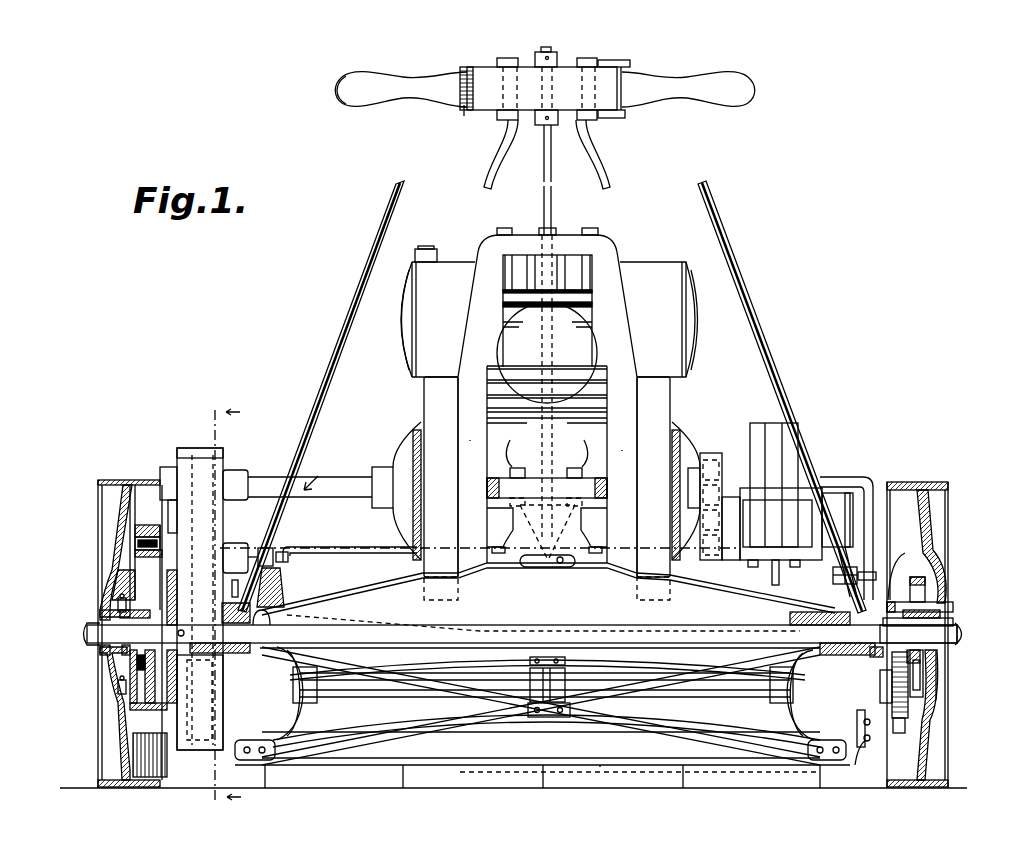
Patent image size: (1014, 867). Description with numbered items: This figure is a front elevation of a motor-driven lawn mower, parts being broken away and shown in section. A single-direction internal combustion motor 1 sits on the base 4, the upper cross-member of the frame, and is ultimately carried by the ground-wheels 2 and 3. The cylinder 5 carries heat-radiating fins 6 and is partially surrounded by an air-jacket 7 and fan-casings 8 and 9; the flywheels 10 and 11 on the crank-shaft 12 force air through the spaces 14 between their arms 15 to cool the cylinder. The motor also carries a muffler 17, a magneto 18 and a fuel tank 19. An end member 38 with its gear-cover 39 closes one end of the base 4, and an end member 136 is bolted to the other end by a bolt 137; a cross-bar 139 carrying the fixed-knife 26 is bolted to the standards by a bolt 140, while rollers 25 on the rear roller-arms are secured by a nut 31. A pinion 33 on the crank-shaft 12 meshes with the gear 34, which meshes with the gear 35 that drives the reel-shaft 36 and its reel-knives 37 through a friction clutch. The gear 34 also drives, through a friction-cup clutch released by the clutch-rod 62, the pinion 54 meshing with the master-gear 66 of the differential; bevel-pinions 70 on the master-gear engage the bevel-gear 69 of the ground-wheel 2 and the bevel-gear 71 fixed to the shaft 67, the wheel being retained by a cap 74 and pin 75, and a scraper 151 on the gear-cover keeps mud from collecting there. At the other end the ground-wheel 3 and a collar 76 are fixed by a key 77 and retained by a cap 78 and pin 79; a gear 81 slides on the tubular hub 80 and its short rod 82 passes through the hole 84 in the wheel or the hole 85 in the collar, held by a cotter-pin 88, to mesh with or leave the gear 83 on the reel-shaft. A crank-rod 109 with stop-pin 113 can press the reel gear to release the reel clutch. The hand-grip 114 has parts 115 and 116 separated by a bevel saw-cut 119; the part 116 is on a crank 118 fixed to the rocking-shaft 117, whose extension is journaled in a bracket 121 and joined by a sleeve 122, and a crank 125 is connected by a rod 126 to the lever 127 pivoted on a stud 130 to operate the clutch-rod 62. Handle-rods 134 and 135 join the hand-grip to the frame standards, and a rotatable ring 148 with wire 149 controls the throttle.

The motor 1 is at (610, 249).
The ground-wheel 2 is at (110, 482).
The ground-wheel 3 is at (924, 482).
The base 4 is at (527, 611).
The cylinder 5 is at (594, 422).
The heat-radiating fins 6 is at (604, 376).
The air-jacket 7 is at (622, 303).
The fan-casing 8 is at (620, 455).
The fan-casing 9 is at (469, 449).
The flywheel 10 is at (670, 402).
The flywheel 11 is at (425, 402).
The crank-shaft 12 is at (342, 497).
The spaces 14 is at (408, 432).
The arms 15 is at (424, 432).
The muffler 17 is at (547, 353).
The magneto 18 is at (790, 440).
The fuel tank 19 is at (655, 272).
The rollers 25 is at (393, 785).
The fixed-knife 26 is at (481, 768).
The nut 31 is at (865, 747).
The pinion 33 is at (223, 458).
The gear 34 is at (218, 527).
The gear 35 is at (200, 748).
The reel-shaft 36 is at (380, 697).
The reel-knives 37 is at (718, 664).
The end member 38 is at (200, 448).
The gear-cover 39 is at (177, 452).
The pinion 54 is at (135, 540).
The clutch-rod 62 is at (281, 574).
The master-gear 66 is at (135, 566).
The shaft 67 is at (355, 641).
The bevel-gear 69 is at (114, 583).
The bevel-pinions 70 is at (118, 604).
The bevel-gear 71 is at (155, 690).
The cap 74 is at (88, 633).
The pin 75 is at (100, 655).
The collar 76 is at (890, 590).
The key 77 is at (940, 633).
The cap 78 is at (957, 647).
The pin 79 is at (945, 660).
The tubular hub 80 is at (923, 665).
The gear 81 is at (935, 680).
The short rod 82 is at (930, 600).
The gear 83 is at (899, 733).
The hole 84 is at (932, 608).
The hole 85 is at (942, 560).
The cotter-pin 88 is at (953, 620).
The crank-rod 109 is at (850, 472).
The stop-pin 113 is at (847, 640).
The hand-grip 114 is at (337, 90).
The part 115 is at (394, 82).
The part 116 is at (701, 82).
The rocking-shaft 117 is at (546, 165).
The crank 118 is at (623, 66).
The bevel saw-cut 119 is at (622, 100).
The bracket 121 is at (505, 522).
The sleeve 122 is at (530, 387).
The crank 125 is at (550, 567).
The rod 126 is at (352, 544).
The lever 127 is at (290, 558).
The stud 130 is at (275, 550).
The handle-rod 134 is at (492, 163).
The handle-rod 135 is at (602, 163).
The end member 136 is at (835, 582).
The bolt 137 is at (840, 552).
The cross-bar 139 is at (598, 770).
The bolt 140 is at (858, 765).
The rotatable ring 148 is at (462, 107).
The wire 149 is at (462, 113).
The scraper 151 is at (167, 777).